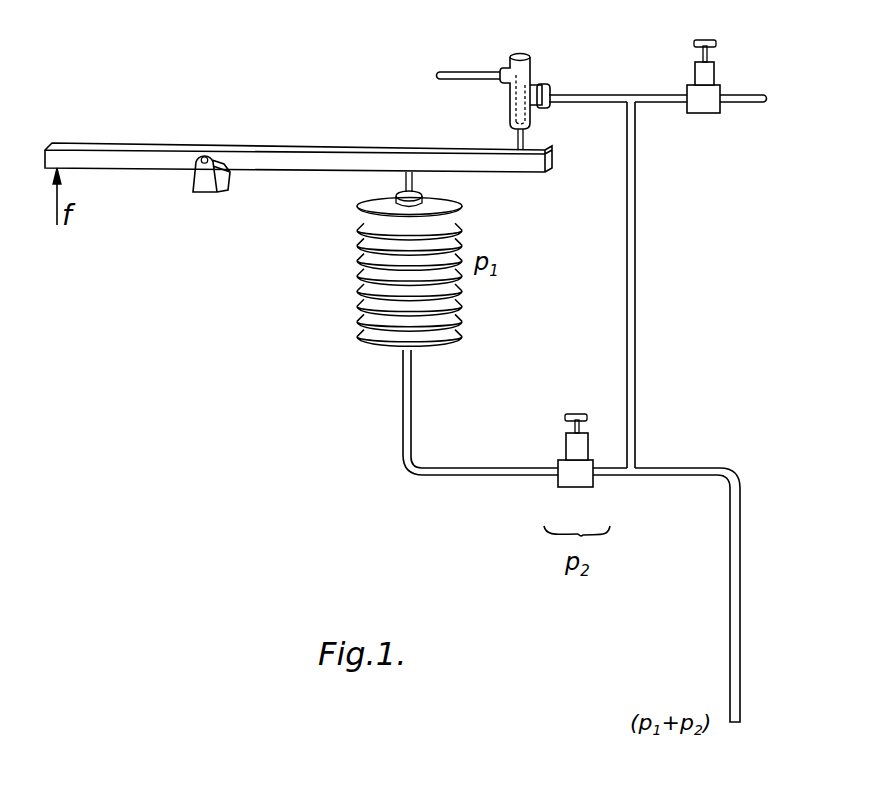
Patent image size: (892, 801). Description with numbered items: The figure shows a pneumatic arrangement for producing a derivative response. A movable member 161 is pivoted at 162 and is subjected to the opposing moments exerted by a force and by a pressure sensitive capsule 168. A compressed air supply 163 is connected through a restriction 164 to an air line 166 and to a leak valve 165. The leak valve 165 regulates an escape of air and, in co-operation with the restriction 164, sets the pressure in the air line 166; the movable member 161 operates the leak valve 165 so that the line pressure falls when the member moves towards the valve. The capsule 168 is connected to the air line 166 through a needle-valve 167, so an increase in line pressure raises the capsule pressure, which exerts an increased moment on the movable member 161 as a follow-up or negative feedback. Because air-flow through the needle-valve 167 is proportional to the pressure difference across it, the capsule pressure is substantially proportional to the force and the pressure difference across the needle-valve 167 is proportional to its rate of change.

The movable member 161 is at (278, 148).
The pivot 162 is at (201, 195).
The compressed air supply 163 is at (757, 104).
The restriction 164 is at (693, 70).
The leak valve 165 is at (536, 64).
The air line 166 is at (637, 258).
The needle-valve 167 is at (577, 488).
The pressure sensitive capsule 168 is at (359, 283).